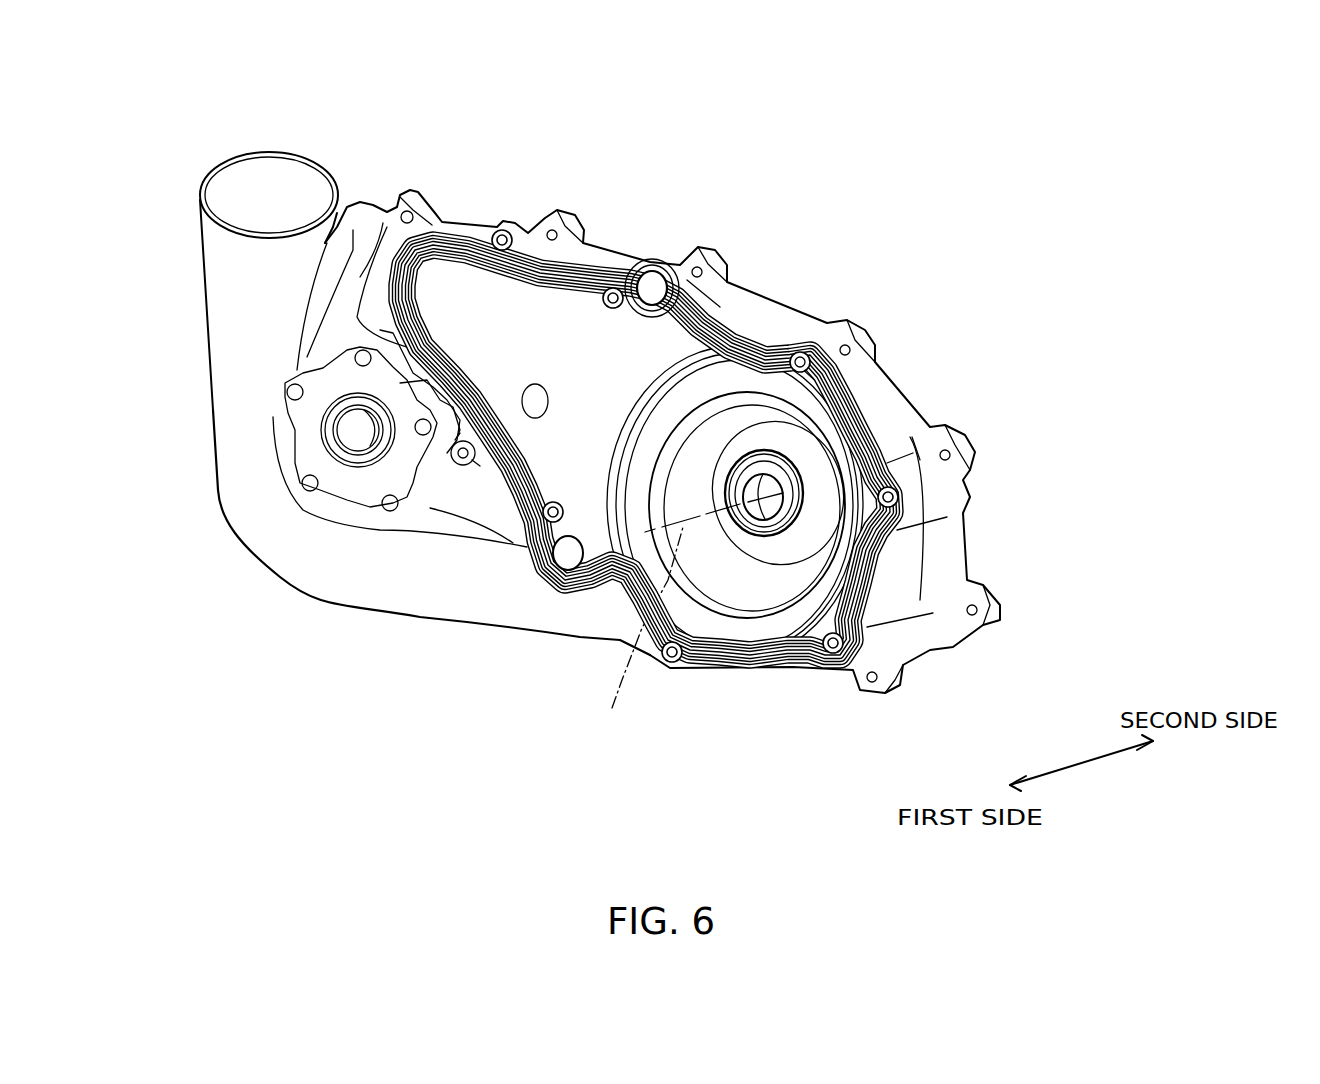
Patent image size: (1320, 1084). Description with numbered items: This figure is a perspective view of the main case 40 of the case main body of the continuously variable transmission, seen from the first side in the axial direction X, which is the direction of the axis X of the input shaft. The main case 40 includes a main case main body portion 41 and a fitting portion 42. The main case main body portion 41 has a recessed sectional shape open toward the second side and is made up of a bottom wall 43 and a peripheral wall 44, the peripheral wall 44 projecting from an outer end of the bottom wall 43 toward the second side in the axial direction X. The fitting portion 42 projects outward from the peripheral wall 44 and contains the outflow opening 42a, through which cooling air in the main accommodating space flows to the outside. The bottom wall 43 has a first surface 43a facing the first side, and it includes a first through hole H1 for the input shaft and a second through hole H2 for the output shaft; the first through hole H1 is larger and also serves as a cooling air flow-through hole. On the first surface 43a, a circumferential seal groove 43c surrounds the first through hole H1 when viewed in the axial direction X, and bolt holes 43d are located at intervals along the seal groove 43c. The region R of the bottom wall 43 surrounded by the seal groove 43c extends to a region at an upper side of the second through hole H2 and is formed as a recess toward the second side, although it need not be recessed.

The main case 40 is at (476, 214).
The main case main body portion 41 is at (320, 603).
The fitting portion 42 is at (217, 260).
The outflow opening 42a is at (263, 180).
The bottom wall 43 is at (580, 620).
The first surface 43a is at (450, 607).
The seal groove 43c is at (693, 670).
The bolt holes 43d is at (803, 352).
The peripheral wall 44 is at (920, 600).
The first through hole H1 is at (762, 512).
The second through hole H2 is at (330, 434).
The region R is at (627, 347).
The axis X is at (643, 640).